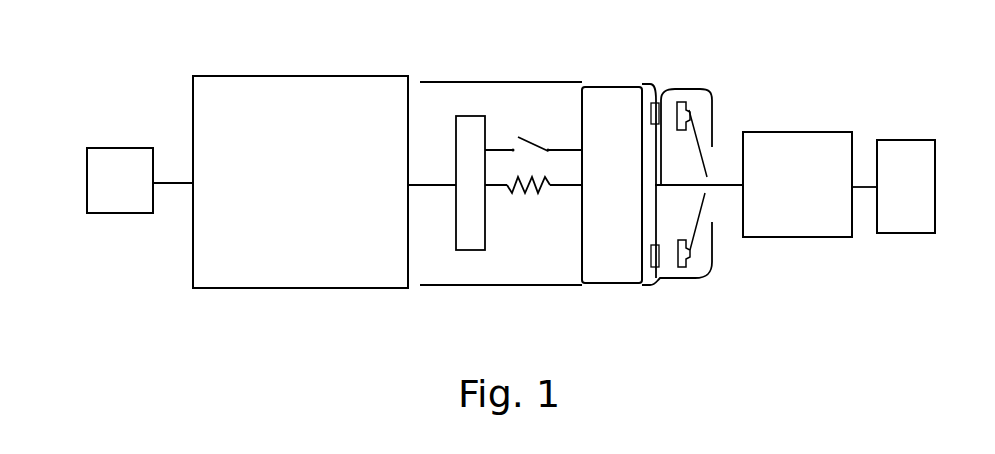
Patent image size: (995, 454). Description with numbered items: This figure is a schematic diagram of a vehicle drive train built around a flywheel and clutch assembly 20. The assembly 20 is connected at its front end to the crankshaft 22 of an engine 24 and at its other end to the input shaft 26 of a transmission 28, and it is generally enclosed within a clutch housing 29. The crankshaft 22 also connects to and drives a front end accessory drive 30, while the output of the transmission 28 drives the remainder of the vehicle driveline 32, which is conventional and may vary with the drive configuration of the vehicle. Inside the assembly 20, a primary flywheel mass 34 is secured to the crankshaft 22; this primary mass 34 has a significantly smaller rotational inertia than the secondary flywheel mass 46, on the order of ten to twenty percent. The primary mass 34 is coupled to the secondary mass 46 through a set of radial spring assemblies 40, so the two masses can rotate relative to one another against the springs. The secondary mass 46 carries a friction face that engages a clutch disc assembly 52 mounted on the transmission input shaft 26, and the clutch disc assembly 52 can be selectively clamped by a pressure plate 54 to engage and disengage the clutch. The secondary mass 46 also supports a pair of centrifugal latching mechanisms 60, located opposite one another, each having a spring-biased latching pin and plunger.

The flywheel and clutch assembly 20 is at (683, 63).
The crankshaft 22 is at (425, 187).
The engine 24 is at (270, 288).
The input shaft 26 is at (732, 187).
The transmission 28 is at (767, 132).
The clutch housing 29 is at (543, 285).
The front end accessory drive 30 is at (105, 213).
The vehicle driveline 32 is at (887, 140).
The primary flywheel mass 34 is at (463, 116).
The radial spring assemblies 40 is at (527, 192).
The secondary flywheel mass 46 is at (603, 87).
The clutch disc assembly 52 is at (663, 97).
The pressure plate 54 is at (688, 108).
The centrifugal latching mechanisms 60 is at (523, 133).